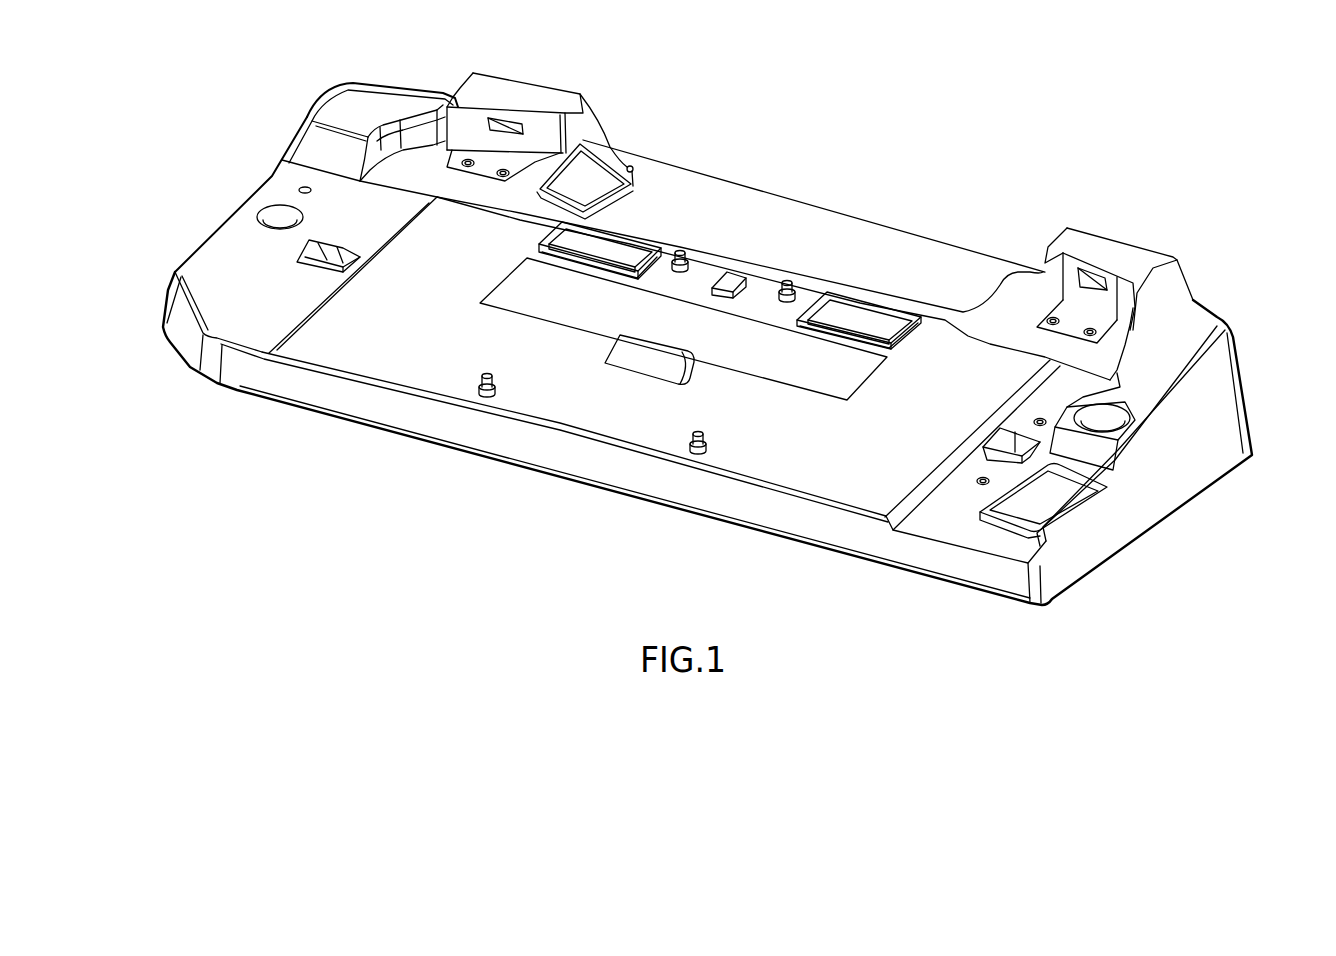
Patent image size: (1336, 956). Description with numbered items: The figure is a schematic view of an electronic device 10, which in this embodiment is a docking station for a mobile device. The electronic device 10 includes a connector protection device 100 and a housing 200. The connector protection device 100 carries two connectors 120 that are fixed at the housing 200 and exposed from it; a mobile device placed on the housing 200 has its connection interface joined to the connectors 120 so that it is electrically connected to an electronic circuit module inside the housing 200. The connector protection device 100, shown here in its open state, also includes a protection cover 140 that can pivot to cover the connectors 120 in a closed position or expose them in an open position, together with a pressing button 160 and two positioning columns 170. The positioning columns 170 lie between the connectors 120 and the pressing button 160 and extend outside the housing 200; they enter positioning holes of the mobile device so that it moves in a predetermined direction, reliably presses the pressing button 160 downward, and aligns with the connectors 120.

The electronic device 10 is at (173, 436).
The connector protection device 100 is at (606, 95).
The connector 120 is at (653, 265).
The protection cover 140 is at (601, 268).
The pressing button 160 is at (745, 272).
The positioning column 170 is at (684, 256).
The housing 200 is at (318, 393).